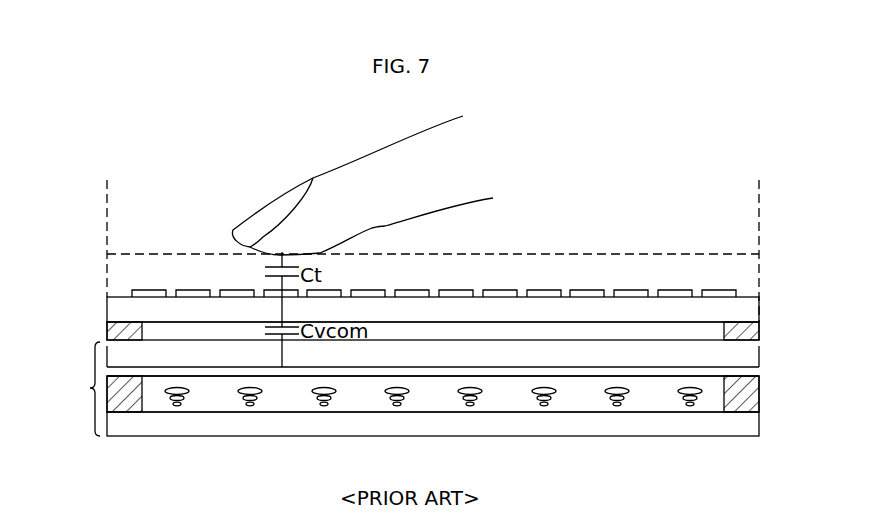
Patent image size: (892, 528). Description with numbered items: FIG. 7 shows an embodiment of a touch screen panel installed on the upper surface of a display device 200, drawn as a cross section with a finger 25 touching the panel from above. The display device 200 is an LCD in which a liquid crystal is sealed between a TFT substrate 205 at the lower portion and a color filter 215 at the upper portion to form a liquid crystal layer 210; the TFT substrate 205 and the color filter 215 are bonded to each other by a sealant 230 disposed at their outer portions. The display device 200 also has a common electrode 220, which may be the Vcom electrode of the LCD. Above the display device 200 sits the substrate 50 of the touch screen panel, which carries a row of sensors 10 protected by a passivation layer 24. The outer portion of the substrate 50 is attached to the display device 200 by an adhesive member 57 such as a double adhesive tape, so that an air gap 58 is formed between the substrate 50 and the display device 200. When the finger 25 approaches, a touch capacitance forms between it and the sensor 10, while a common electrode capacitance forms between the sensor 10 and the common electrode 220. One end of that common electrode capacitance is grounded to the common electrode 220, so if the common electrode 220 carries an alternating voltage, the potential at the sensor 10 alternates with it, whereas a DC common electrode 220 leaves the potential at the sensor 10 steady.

The sensor 10 is at (147, 292).
The passivation layer 24 is at (548, 275).
The finger 25 is at (342, 170).
The substrate 50 is at (653, 313).
The adhesive member 57 is at (750, 318).
The air gap 58 is at (582, 332).
The display device 200 is at (406, 407).
The color filter 215 is at (210, 357).
The common electrode 220 is at (355, 373).
The sealant 230 is at (737, 407).
The liquid crystal layer 210 is at (428, 403).
The TFT substrate 205 is at (503, 420).